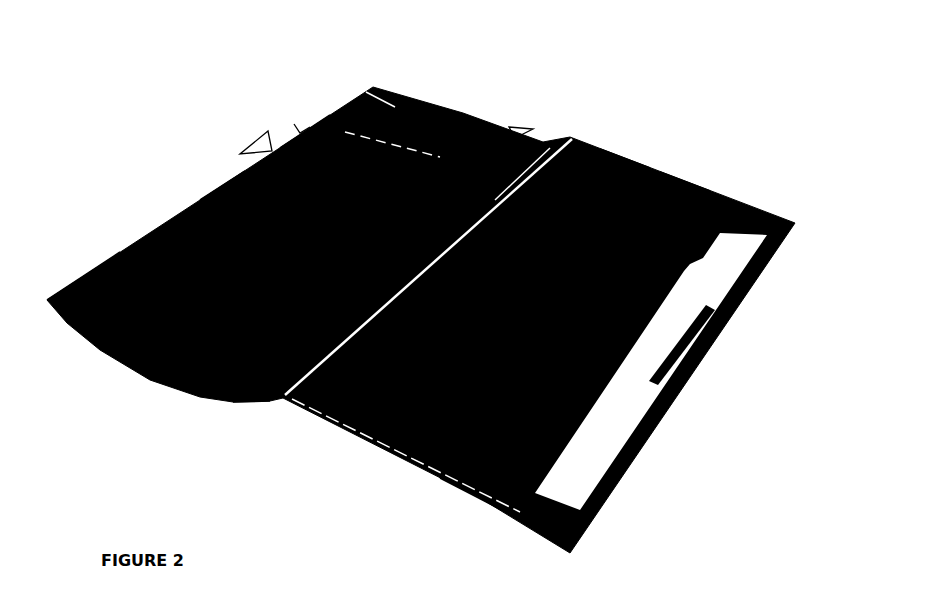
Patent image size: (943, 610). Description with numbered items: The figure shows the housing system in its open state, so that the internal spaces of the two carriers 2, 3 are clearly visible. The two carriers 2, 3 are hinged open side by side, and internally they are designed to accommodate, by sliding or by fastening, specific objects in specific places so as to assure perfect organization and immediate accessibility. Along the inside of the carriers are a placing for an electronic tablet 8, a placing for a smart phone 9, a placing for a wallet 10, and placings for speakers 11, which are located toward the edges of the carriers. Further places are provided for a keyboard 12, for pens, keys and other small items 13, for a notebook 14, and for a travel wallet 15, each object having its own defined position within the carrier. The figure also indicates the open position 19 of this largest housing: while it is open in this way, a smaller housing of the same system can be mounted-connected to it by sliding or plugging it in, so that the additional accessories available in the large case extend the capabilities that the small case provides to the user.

The carrier 2 is at (770, 213).
The carrier 3 is at (300, 132).
The electronic tablet placing 8 is at (220, 187).
The smart phone placing 9 is at (447, 115).
The wallet placing 10 is at (97, 267).
The speakers placing 11 is at (516, 131).
The keyboard placing 12 is at (623, 158).
The placing for pens, keys and other small items 13 is at (465, 492).
The notebook placing 14 is at (682, 180).
The travel wallet placing 15 is at (399, 460).
The open mounting position 19 is at (253, 150).